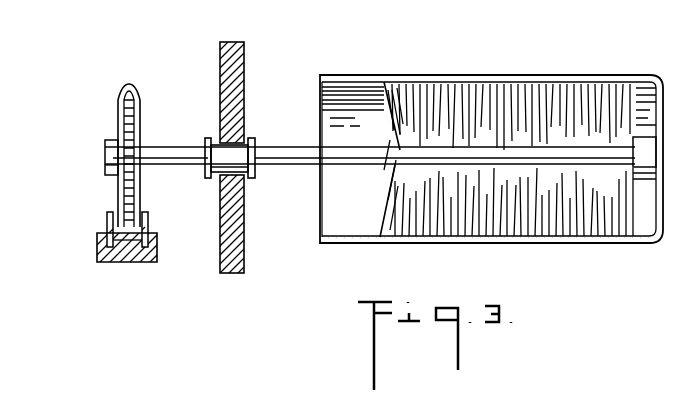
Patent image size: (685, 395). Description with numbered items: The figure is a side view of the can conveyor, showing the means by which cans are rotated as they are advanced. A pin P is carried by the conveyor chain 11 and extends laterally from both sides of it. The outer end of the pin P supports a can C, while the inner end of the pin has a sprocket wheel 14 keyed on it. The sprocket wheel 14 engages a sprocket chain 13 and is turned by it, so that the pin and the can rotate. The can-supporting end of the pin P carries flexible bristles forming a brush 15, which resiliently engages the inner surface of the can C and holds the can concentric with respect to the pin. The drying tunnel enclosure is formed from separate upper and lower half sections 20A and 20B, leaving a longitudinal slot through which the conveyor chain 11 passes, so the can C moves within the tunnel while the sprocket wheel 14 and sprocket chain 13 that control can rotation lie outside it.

The conveyor chain 11 is at (240, 178).
The sprocket chain 13 is at (107, 221).
The sprocket wheel 14 is at (118, 113).
The brush 15 is at (408, 90).
The upper half section 20A is at (245, 59).
The lower half section 20B is at (235, 257).
The can C is at (358, 75).
The pin P is at (287, 148).